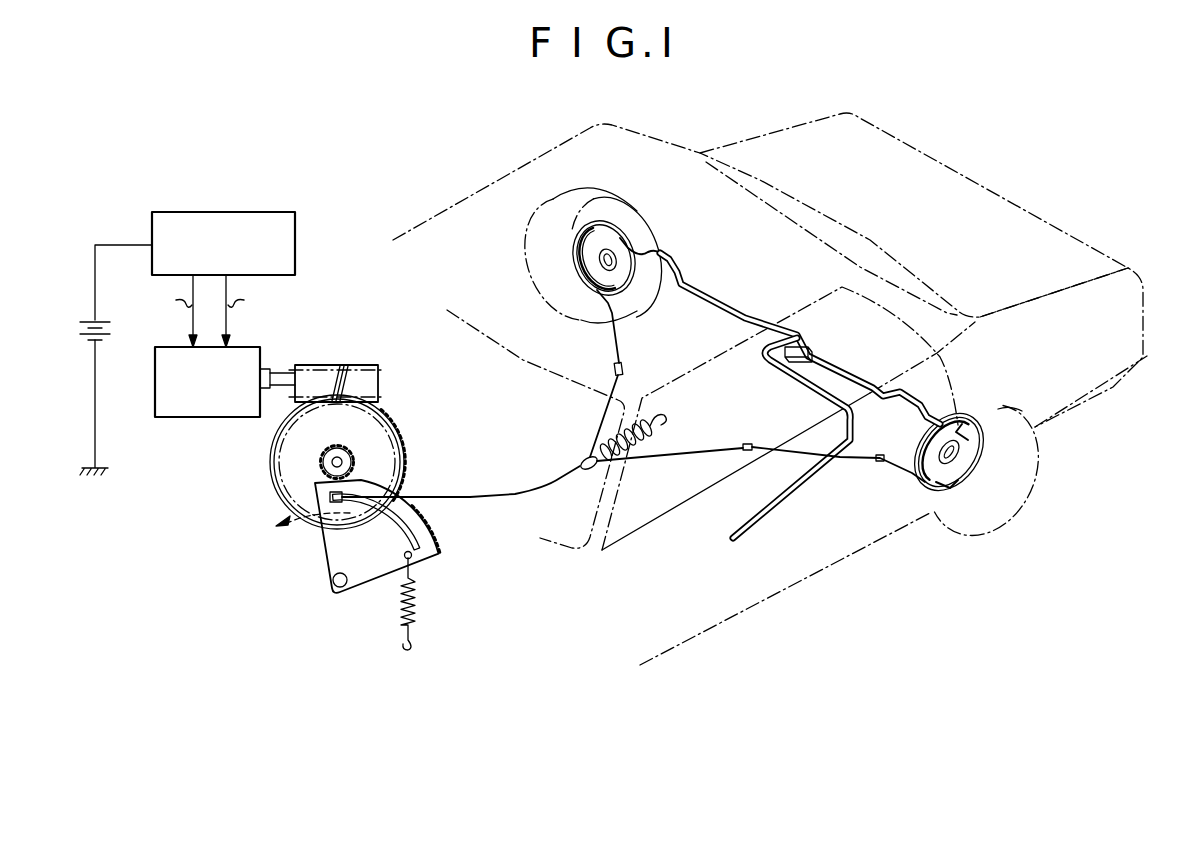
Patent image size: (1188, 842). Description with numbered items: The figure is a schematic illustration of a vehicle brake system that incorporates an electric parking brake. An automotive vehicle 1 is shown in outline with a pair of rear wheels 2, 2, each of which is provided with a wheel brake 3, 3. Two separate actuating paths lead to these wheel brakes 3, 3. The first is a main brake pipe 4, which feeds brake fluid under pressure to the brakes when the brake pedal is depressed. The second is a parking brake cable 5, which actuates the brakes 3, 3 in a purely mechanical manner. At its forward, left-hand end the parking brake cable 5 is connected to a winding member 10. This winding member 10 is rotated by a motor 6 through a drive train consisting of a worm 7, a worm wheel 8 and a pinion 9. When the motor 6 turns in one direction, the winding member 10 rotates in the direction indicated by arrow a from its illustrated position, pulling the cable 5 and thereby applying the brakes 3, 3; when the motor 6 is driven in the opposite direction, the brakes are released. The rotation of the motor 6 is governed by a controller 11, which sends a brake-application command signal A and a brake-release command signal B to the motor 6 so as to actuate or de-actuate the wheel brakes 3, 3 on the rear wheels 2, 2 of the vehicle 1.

The automotive vehicle 1 is at (590, 140).
The rear wheel 2 is at (545, 228).
The wheel brake 3 is at (575, 262).
The main brake pipe 4 is at (744, 528).
The parking brake cable 5 is at (527, 492).
The motor 6 is at (198, 417).
The worm 7 is at (320, 376).
The worm wheel 8 is at (287, 451).
The pinion 9 is at (334, 448).
The winding member 10 is at (340, 556).
The controller 11 is at (258, 212).